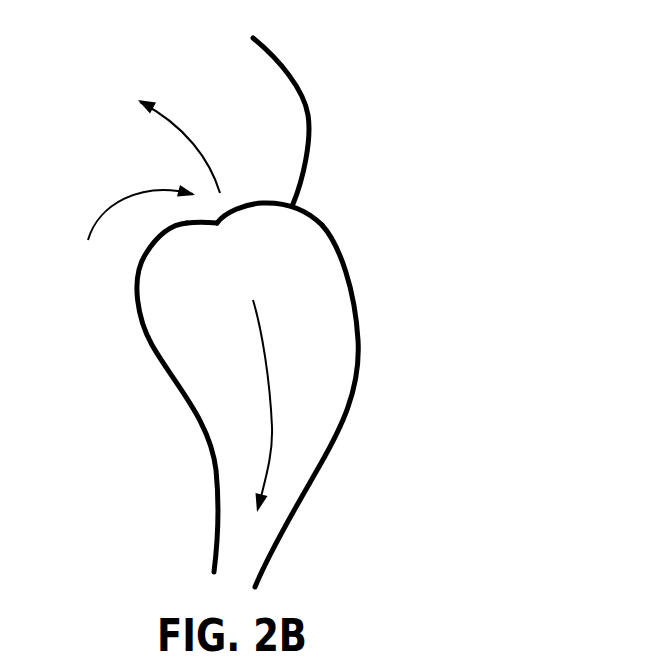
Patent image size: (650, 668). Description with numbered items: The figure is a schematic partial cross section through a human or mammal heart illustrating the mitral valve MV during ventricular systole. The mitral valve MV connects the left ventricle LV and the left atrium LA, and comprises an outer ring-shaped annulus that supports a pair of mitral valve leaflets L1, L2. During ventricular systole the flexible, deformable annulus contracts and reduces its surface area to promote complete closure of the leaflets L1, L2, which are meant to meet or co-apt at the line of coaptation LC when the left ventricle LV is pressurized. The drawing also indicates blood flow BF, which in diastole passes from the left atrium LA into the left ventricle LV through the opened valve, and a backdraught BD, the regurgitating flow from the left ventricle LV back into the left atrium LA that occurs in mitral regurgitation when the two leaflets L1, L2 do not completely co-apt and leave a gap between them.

The left atrium LA is at (265, 105).
The mitral valve leaflet L2 is at (263, 197).
The line of coaptation LC is at (220, 233).
The mitral valve leaflet L1 is at (183, 233).
The backdraught BD is at (155, 132).
The mitral valve MV is at (125, 231).
The blood flow BF is at (277, 340).
The left ventricle LV is at (297, 345).